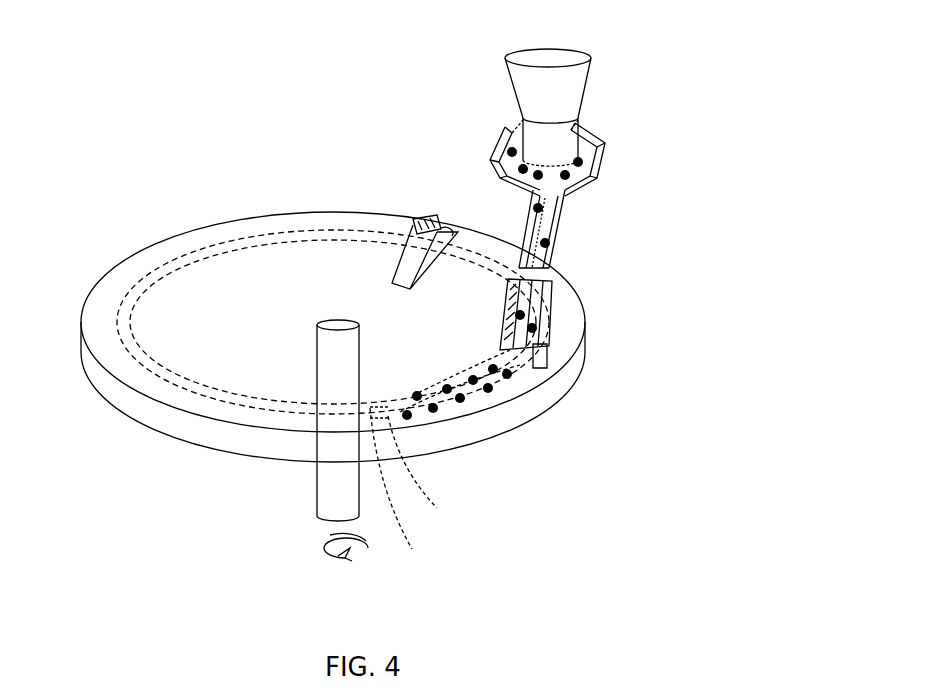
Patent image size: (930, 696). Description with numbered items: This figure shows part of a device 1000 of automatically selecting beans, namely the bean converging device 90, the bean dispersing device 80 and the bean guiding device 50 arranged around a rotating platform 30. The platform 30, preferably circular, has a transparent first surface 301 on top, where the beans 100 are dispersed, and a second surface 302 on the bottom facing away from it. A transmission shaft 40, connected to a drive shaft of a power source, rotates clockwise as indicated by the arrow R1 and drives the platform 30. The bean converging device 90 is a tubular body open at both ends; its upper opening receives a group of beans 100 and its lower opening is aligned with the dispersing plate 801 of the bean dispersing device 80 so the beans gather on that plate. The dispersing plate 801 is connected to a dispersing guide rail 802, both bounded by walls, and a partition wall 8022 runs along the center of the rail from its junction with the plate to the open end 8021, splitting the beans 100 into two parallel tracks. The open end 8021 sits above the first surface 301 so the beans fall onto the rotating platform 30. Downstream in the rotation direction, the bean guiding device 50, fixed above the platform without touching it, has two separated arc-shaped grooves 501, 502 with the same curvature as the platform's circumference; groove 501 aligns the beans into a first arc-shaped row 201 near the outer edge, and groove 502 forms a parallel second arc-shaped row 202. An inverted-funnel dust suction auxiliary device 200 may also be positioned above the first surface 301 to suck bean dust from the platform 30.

The device of automatically selecting beans 1000 is at (202, 81).
The platform 30 is at (312, 396).
The first surface 301 is at (147, 383).
The second surface 302 is at (168, 436).
The transmission shaft 40 is at (316, 493).
The arrow R1 is at (346, 570).
The dust suction auxiliary device 200 is at (413, 218).
The first arc-shaped row 201 is at (435, 467).
The second arc-shaped row 202 is at (423, 488).
The bean converging device 90 is at (587, 80).
The bean dispersing device 80 is at (593, 210).
The dispersing plate 801 is at (607, 183).
The dispersing guide rail 802 is at (601, 256).
The open end 8021 is at (575, 292).
The partition wall 8022 is at (573, 249).
The bean guiding device 50 is at (597, 364).
The groove 501 is at (510, 370).
The groove 502 is at (530, 395).
The beans 100 is at (470, 420).